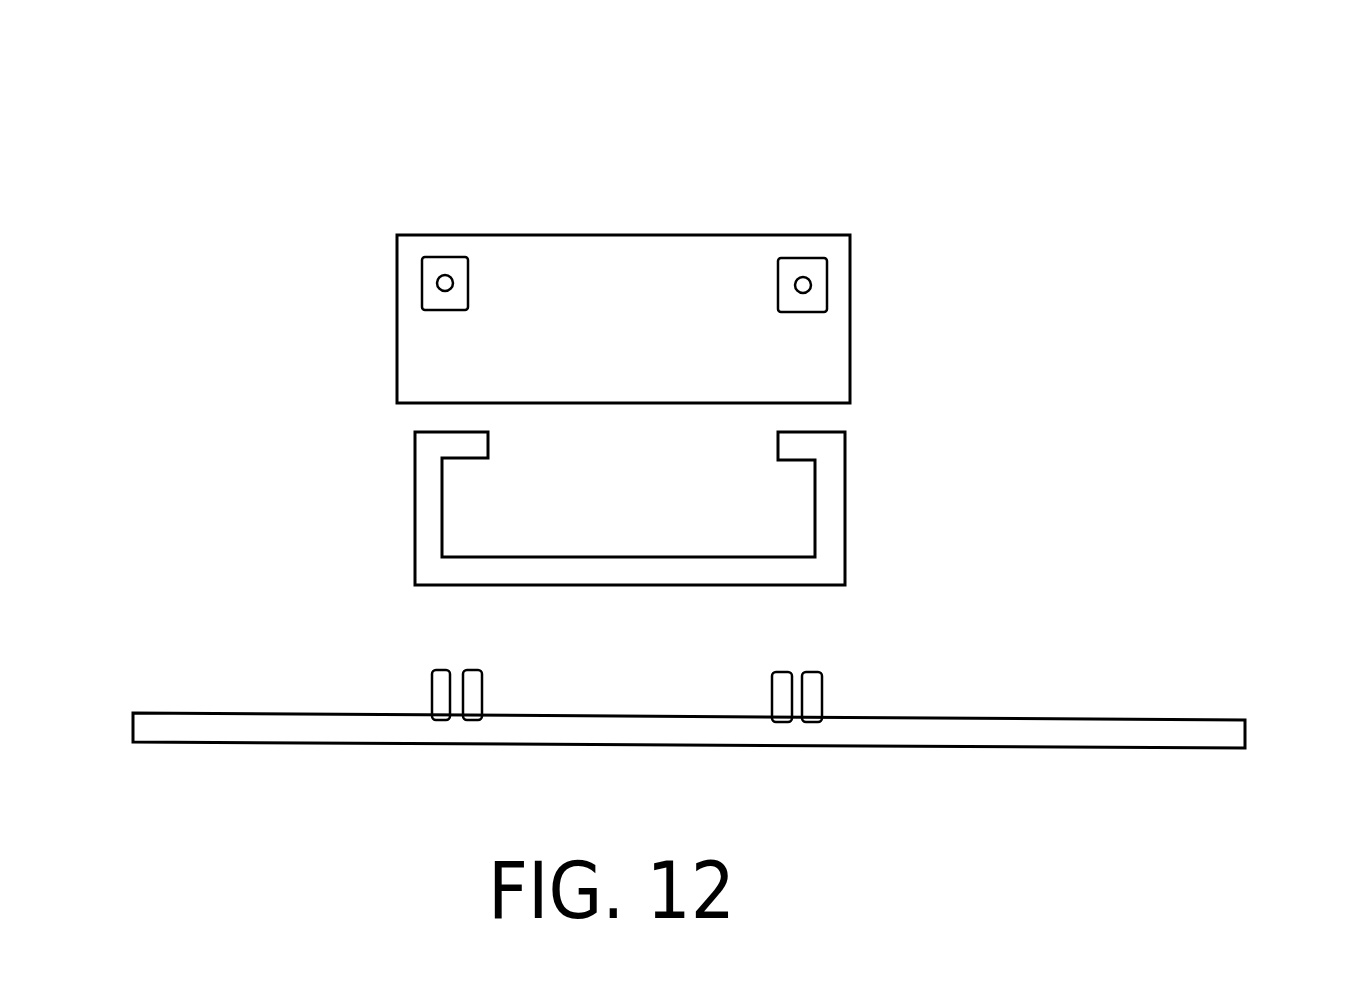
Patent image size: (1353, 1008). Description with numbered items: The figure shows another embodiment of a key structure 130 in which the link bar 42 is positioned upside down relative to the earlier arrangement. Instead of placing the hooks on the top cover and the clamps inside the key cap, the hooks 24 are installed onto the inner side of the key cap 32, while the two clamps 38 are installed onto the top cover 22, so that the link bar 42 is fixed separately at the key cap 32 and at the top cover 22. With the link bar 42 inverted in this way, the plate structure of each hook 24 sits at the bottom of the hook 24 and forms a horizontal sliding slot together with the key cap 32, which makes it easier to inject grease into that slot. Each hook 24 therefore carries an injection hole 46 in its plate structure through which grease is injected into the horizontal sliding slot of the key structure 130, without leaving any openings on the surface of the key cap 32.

The key structure 130 is at (1035, 118).
The key cap 32 is at (832, 351).
The hook 24 is at (408, 267).
The injection hole 46 is at (428, 296).
The link bar 42 is at (860, 524).
The top cover 22 is at (1155, 705).
The clamps 38 is at (836, 690).